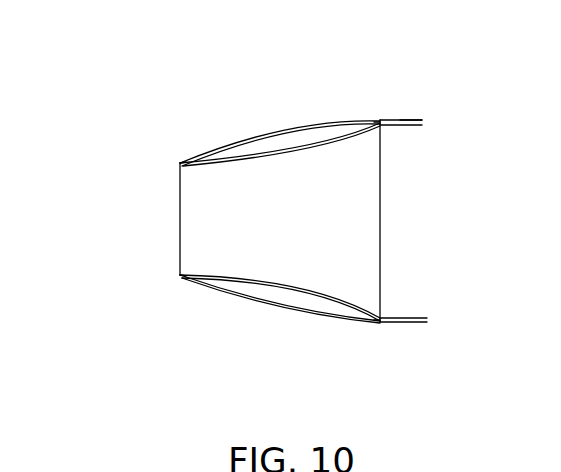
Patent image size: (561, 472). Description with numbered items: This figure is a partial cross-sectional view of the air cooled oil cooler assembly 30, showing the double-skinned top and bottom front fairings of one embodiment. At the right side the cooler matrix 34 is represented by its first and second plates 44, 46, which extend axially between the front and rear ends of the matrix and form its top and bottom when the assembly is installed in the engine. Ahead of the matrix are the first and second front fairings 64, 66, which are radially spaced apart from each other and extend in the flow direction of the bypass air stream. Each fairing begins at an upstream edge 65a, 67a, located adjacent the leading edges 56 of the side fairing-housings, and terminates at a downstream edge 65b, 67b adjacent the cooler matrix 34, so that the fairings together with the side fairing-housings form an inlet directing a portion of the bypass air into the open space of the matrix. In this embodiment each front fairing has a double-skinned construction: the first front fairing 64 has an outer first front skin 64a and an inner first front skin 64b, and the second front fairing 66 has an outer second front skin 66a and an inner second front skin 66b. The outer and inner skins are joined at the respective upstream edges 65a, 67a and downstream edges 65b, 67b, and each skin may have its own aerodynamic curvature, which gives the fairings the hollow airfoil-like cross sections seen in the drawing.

The cooler assembly 30 is at (202, 122).
The cooler matrix 34 is at (403, 137).
The first plate 44 is at (416, 121).
The second plate 46 is at (402, 324).
The leading edges 56 is at (180, 210).
The first front fairing 64 is at (259, 118).
The outer first front skin 64a is at (284, 131).
The inner first front skin 64b is at (313, 148).
The upstream edge 65a is at (180, 163).
The downstream edge 65b is at (386, 120).
The second front fairing 66 is at (231, 314).
The outer second front skin 66a is at (303, 316).
The inner second front skin 66b is at (291, 285).
The upstream edge 67a is at (180, 275).
The downstream edge 67b is at (388, 324).